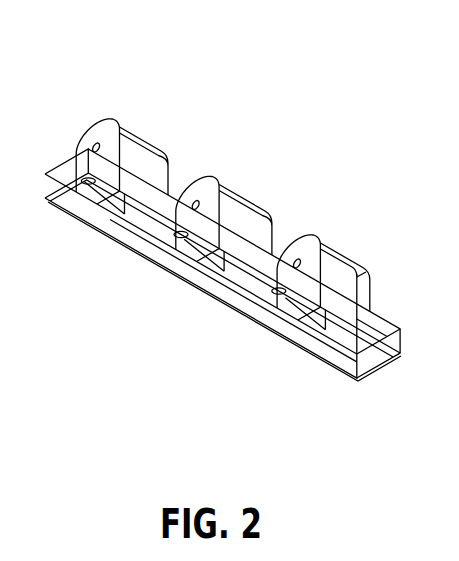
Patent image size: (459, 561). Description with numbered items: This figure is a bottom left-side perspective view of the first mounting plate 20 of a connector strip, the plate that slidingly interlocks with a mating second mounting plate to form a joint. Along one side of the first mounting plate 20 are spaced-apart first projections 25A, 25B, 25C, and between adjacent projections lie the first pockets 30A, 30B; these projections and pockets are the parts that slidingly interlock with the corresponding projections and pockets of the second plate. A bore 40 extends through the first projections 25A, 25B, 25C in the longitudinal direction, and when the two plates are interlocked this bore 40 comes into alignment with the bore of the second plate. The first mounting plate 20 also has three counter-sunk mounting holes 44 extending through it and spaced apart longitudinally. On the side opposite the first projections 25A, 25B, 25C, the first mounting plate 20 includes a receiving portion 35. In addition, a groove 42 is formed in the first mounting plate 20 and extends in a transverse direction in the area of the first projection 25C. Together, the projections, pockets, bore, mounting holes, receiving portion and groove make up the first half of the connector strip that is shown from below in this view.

The first mounting plate 20 is at (250, 203).
The first projection 25A is at (102, 133).
The first projection 25B is at (207, 192).
The first projection 25C is at (318, 236).
The first pocket 30A is at (173, 188).
The first pocket 30B is at (277, 248).
The receiving portion 35 is at (153, 230).
The bore 40 is at (94, 146).
The groove 42 is at (374, 287).
The mounting holes 44 is at (86, 185).